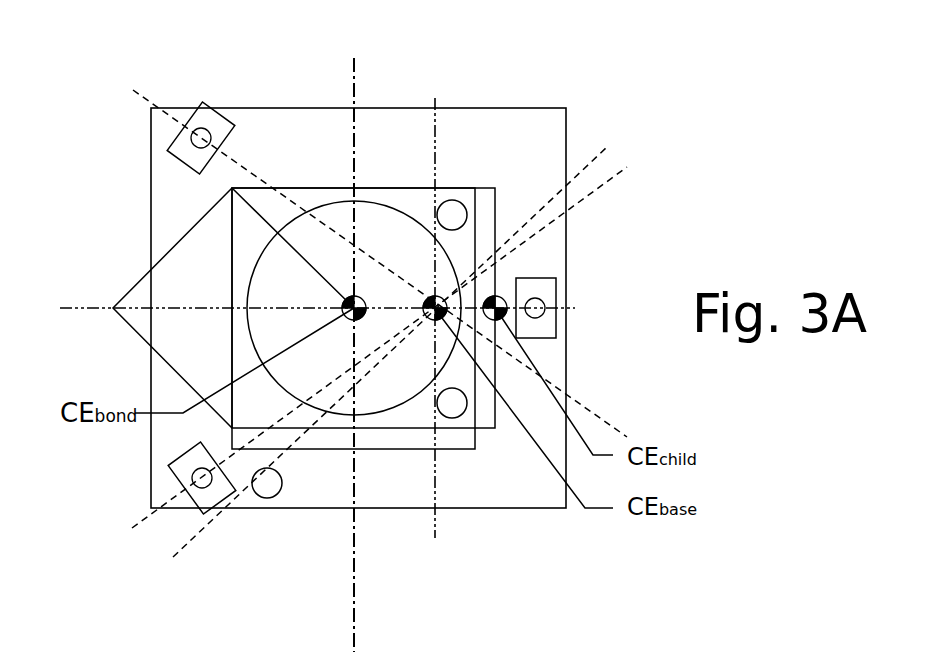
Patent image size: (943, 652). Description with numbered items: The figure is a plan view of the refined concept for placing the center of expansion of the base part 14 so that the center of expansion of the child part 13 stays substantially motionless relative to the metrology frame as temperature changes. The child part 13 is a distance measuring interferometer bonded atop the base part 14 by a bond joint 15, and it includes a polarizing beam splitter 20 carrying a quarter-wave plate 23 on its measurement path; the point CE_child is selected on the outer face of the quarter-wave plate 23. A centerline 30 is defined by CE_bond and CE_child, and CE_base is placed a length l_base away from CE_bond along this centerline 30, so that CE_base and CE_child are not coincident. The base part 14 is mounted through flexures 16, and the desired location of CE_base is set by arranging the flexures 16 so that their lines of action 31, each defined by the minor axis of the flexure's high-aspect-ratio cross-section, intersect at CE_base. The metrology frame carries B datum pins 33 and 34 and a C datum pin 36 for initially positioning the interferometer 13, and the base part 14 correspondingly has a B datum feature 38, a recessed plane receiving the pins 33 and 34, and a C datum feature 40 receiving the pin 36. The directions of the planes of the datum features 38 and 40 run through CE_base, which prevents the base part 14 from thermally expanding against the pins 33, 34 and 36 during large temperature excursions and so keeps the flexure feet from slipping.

The child part 13 is at (485, 442).
The base part 14 is at (277, 108).
The bond joint 15 is at (366, 414).
The flexures 16 is at (180, 133).
The polarizing beam splitter 20 is at (243, 230).
The quarter-wave plate 23 is at (495, 205).
The centerline 30 is at (88, 312).
The lines of action 31 is at (150, 102).
The B datum pin 33 is at (455, 199).
The B datum pin 34 is at (453, 418).
The C datum pin 36 is at (270, 498).
The B datum feature 38 is at (435, 98).
The C datum feature 40 is at (197, 537).